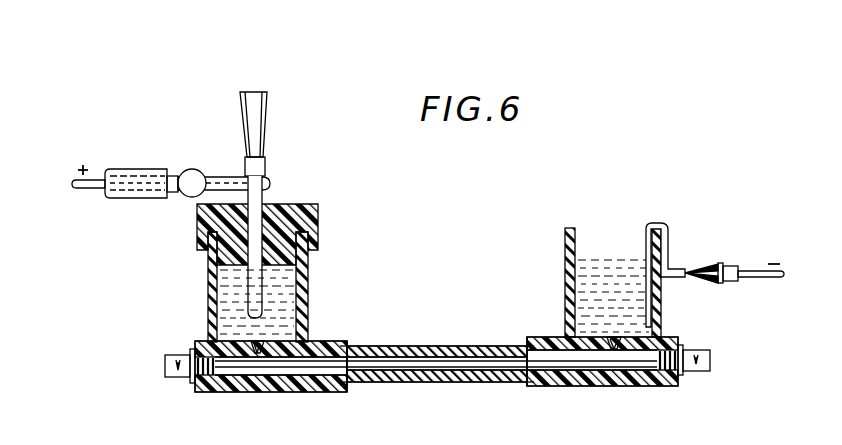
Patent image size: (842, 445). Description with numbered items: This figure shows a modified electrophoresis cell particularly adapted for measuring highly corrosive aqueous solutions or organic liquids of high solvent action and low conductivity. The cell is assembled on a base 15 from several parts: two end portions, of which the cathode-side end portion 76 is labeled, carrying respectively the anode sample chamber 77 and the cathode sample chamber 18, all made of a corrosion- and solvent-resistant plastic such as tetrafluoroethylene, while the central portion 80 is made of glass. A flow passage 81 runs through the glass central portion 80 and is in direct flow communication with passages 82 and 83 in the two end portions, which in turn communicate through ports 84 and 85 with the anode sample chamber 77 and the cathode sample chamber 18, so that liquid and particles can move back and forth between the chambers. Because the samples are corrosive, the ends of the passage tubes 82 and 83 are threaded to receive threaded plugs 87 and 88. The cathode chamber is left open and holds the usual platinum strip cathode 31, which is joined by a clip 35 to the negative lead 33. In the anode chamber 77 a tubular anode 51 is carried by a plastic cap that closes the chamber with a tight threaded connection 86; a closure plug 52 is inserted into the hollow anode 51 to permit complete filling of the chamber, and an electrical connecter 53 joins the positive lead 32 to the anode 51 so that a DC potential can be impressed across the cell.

The base 15 is at (258, 392).
The right electrolyte vessel 18 is at (622, 214).
The cathode 31 is at (668, 233).
The positive lead 32 is at (80, 191).
The negative lead 33 is at (765, 280).
The clip 35 is at (730, 265).
The tubular anode 51 is at (267, 162).
The closure plug 52 is at (264, 122).
The electrical connecter 53 is at (152, 157).
The end portion 76 is at (578, 388).
The anode sample chamber 77 is at (307, 298).
The central portion 80 is at (489, 326).
The flow passage 81 is at (452, 382).
The passage 82 is at (326, 392).
The passage 83 is at (560, 388).
The port 84 is at (258, 344).
The port 85 is at (614, 340).
The threaded connection 86 is at (317, 235).
The threaded plug 87 is at (177, 353).
The threaded plug 88 is at (681, 346).